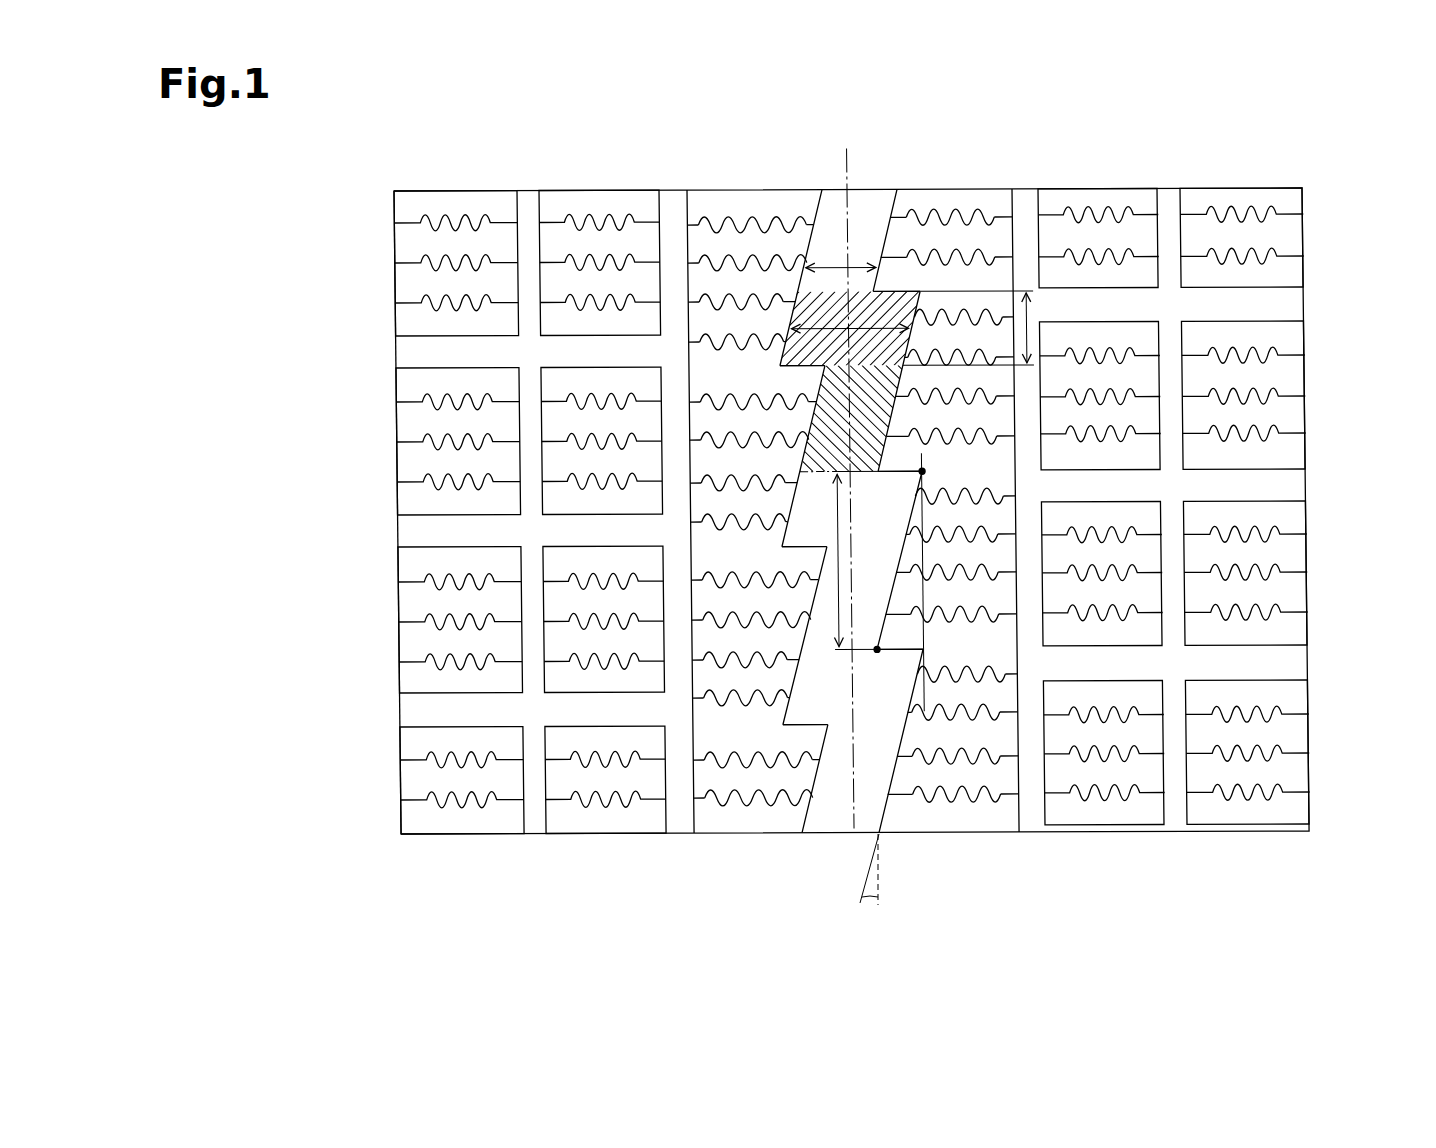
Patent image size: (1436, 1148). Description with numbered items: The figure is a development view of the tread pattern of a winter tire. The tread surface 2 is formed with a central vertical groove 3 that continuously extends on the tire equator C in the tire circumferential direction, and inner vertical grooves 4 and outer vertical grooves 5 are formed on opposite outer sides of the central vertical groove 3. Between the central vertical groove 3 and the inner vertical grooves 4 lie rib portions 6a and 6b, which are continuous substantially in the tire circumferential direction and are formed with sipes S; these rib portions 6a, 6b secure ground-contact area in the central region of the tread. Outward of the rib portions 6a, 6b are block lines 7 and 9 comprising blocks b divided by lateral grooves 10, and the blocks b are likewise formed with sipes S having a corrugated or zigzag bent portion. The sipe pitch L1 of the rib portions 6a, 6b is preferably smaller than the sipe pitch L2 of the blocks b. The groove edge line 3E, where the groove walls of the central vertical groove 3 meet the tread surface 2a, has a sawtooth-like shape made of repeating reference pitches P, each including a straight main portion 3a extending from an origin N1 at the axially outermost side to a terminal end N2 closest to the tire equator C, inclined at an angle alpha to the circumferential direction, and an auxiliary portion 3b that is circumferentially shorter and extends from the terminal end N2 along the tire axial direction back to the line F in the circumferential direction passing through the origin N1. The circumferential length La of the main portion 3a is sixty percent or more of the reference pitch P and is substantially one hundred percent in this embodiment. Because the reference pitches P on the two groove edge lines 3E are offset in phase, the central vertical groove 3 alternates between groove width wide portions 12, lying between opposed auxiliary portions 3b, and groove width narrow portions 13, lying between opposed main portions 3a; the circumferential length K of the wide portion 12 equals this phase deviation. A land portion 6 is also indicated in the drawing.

The tread surface 2 is at (1168, 162).
The tread surface 2a is at (420, 820).
The central vertical groove 3 is at (851, 510).
The groove edge line 3E is at (851, 517).
The main portion 3a is at (908, 712).
The auxiliary portion 3b is at (895, 655).
The inner vertical grooves 4 is at (673, 200).
The outer vertical grooves 5 is at (530, 200).
The block row 6 is at (1090, 190).
The rib portion 6a is at (945, 200).
The rib portion 6b is at (748, 200).
The block line 7 is at (590, 182).
The block line 9 is at (437, 186).
The lateral grooves 10 is at (415, 358).
The groove width wide portion 12 is at (790, 333).
The groove width narrow portion 13 is at (835, 434).
The block b is at (403, 242).
The sipe S is at (695, 523).
The tire equator C is at (845, 472).
The length of groove width wide portion K is at (1028, 316).
The origin N1 is at (920, 478).
The terminal end N2 is at (877, 648).
The sipe pitch of rib portions L1 is at (1015, 757).
The sipe pitch of block L2 is at (1305, 757).
The inclining angle alpha is at (869, 884).
The line in tire circumferential direction F is at (927, 658).
The reference pitch P is at (848, 890).
The length of main portion in tire circumferential direction La is at (698, 690).